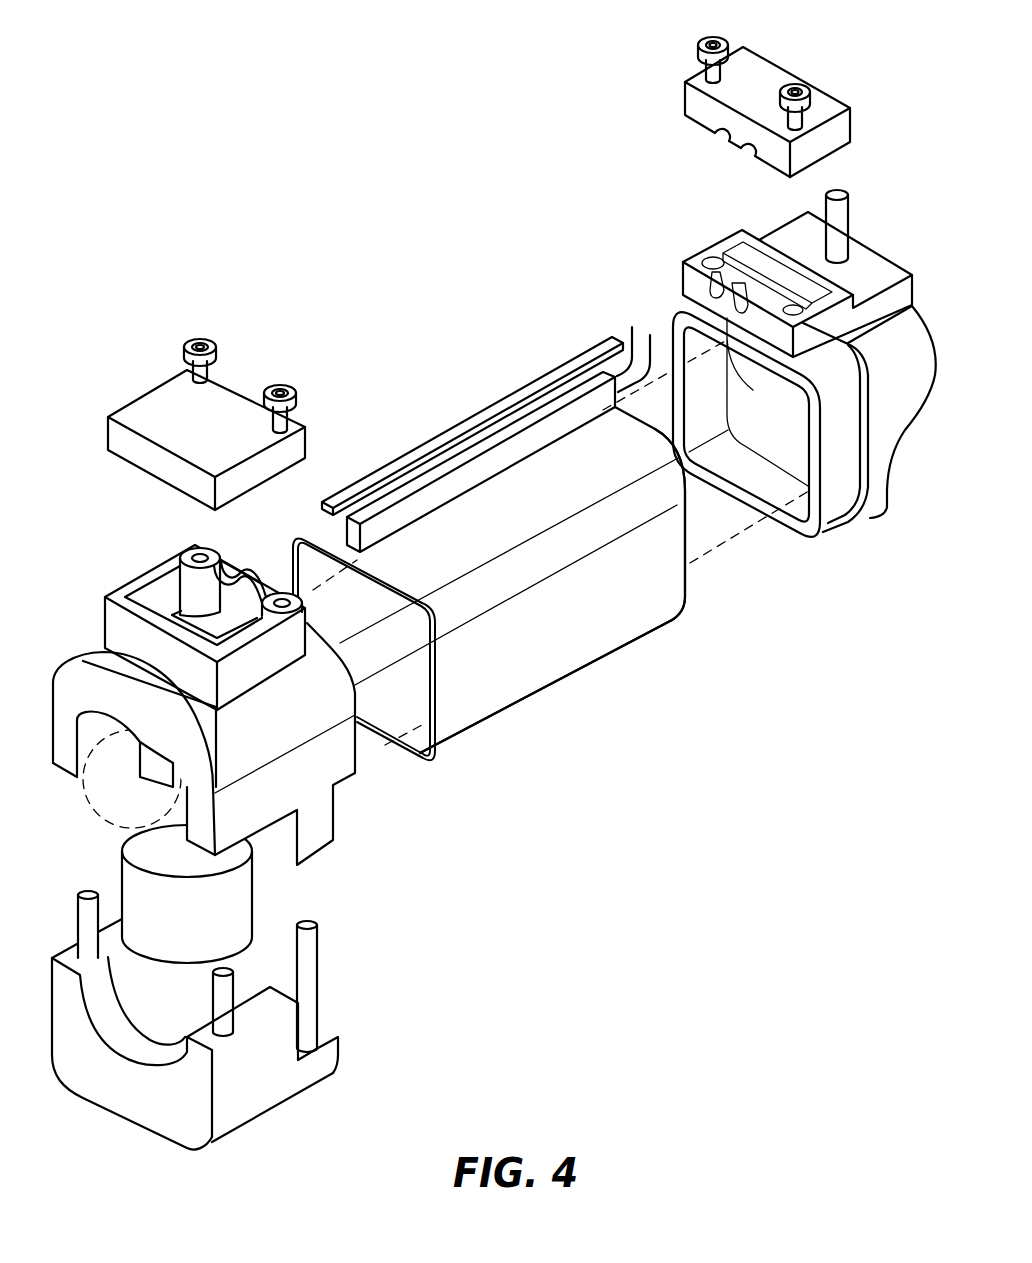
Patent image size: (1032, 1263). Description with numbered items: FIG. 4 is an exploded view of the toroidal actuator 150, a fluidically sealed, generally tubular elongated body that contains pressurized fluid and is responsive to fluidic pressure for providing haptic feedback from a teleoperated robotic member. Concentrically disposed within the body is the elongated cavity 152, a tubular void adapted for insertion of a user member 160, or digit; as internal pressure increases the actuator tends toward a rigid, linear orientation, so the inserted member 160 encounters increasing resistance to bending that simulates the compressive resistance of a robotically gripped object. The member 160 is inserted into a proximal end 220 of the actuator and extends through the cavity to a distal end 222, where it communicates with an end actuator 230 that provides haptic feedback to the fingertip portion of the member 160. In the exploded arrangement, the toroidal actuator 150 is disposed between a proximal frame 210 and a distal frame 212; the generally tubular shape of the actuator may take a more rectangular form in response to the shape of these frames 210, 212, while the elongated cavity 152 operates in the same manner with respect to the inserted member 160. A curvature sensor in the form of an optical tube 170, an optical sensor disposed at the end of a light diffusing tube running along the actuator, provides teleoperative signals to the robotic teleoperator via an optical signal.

The toroidal actuator 150 is at (595, 638).
The elongated cavity 152 is at (415, 683).
The inserted user member 160 is at (92, 800).
The optical tube 170 is at (457, 428).
The proximal frame 210 is at (875, 503).
The distal frame 212 is at (300, 736).
The proximal end 220 is at (682, 596).
The distal end 222 is at (475, 715).
The end actuator 230 is at (212, 933).